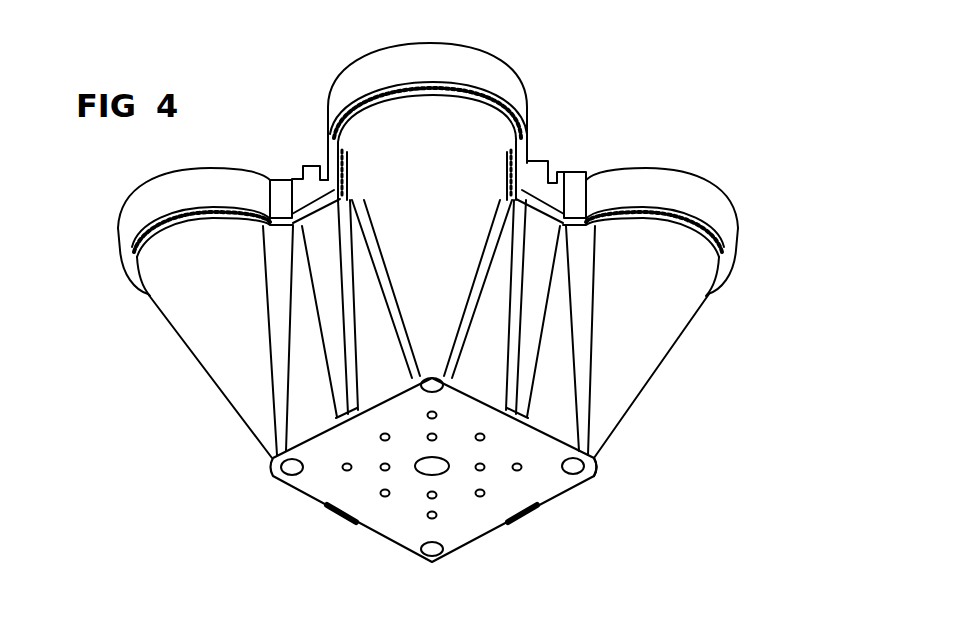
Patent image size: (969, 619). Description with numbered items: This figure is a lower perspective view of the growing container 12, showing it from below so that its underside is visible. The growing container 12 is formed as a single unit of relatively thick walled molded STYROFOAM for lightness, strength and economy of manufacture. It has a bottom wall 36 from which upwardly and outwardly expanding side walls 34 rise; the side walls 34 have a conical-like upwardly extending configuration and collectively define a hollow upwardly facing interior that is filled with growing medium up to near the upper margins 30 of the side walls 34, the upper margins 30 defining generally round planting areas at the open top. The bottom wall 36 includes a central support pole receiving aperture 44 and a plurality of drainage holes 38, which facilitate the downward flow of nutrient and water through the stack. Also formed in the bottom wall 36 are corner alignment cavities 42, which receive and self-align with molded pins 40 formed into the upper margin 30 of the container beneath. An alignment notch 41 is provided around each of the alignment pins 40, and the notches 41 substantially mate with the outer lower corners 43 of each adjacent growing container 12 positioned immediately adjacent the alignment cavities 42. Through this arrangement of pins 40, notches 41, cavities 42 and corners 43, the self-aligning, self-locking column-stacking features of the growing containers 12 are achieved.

The growing container 12 is at (445, 304).
The upper margin 30 is at (482, 60).
The side wall 34 is at (622, 283).
The bottom wall 36 is at (514, 495).
The drainage hole 38 is at (480, 513).
The molded pin 40 is at (596, 163).
The alignment notch 41 is at (540, 172).
The corner alignment cavity 42 is at (583, 477).
The outer lower corner 43 is at (600, 456).
The central support pole receiving aperture 44 is at (424, 477).